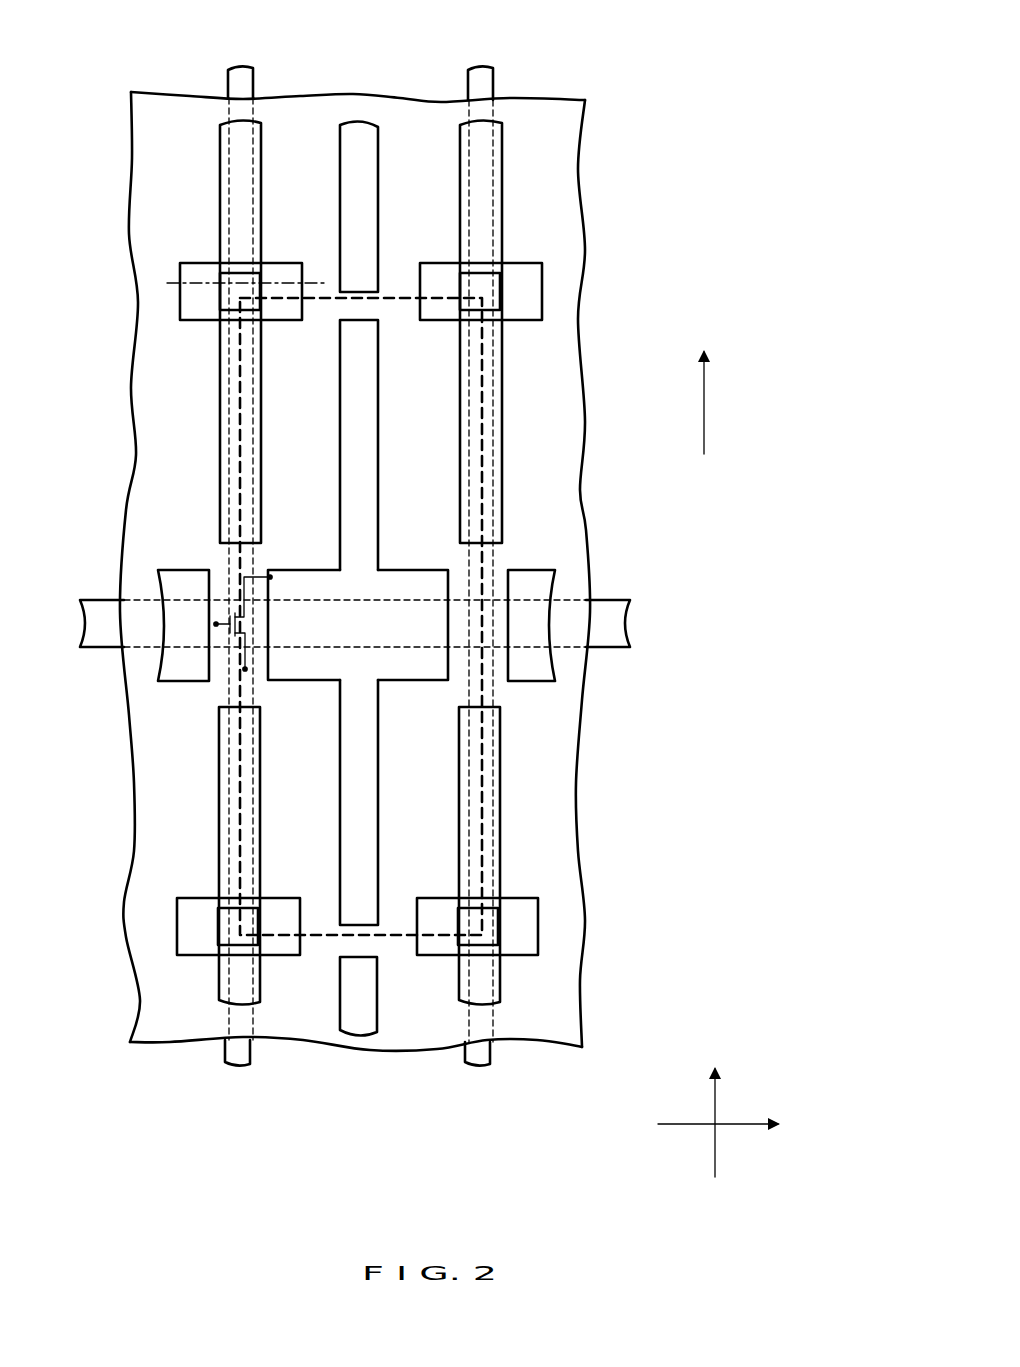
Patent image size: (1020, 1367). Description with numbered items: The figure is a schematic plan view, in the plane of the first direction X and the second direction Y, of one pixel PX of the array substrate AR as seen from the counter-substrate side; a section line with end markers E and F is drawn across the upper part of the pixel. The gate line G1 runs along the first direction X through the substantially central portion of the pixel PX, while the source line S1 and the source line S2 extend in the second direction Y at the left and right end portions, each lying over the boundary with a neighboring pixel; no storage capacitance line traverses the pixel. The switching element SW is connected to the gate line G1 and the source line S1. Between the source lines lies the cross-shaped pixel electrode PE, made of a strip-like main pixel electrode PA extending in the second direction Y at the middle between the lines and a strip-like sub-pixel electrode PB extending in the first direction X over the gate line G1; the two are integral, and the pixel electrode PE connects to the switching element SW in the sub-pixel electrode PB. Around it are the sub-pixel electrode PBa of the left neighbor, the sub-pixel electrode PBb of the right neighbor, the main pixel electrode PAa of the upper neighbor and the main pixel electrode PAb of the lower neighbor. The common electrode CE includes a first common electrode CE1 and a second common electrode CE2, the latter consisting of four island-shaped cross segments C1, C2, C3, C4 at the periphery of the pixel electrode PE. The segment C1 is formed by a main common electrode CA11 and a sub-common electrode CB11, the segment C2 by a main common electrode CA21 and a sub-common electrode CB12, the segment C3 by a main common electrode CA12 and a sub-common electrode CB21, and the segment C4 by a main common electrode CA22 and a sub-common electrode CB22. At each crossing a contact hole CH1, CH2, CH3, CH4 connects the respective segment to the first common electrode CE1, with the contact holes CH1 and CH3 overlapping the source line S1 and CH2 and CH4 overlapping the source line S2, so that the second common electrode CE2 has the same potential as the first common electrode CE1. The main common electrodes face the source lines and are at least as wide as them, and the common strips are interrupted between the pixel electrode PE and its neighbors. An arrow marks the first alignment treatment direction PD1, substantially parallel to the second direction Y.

The array substrate AR is at (670, 138).
The source line S1 is at (240, 68).
The source line S2 is at (480, 68).
The pixel PX is at (402, 295).
The section line E is at (237, 285).
The section line F is at (319, 285).
The main pixel electrode PAa is at (380, 167).
The main pixel electrode PA is at (370, 478).
The sub-pixel electrode PB is at (420, 682).
The pixel electrode PE is at (454, 622).
The sub-pixel electrode PBa is at (178, 682).
The sub-pixel electrode PBb is at (530, 682).
The gate line G1 is at (80, 626).
The switching element SW is at (258, 626).
The main common electrode CA11 is at (218, 443).
The main common electrode CA21 is at (502, 444).
The main common electrode CA12 is at (219, 807).
The main common electrode CA22 is at (500, 807).
The segment C1 is at (176, 260).
The segment C2 is at (544, 262).
The segment C3 is at (178, 896).
The segment C4 is at (540, 896).
The contact hole CH1 is at (219, 300).
The contact hole CH2 is at (500, 300).
The contact hole CH3 is at (218, 936).
The contact hole CH4 is at (498, 936).
The sub-common electrode CB11 is at (290, 322).
The sub-common electrode CB12 is at (430, 322).
The sub-common electrode CB21 is at (290, 896).
The sub-common electrode CB22 is at (430, 896).
The main pixel electrode PAb is at (357, 1038).
The first common electrode CE1 is at (127, 1049).
The second common electrode CE2 is at (216, 1011).
The common electrode CE is at (213, 1132).
The first alignment treatment direction PD1 is at (705, 405).
The first direction X is at (728, 1126).
The second direction Y is at (712, 1106).